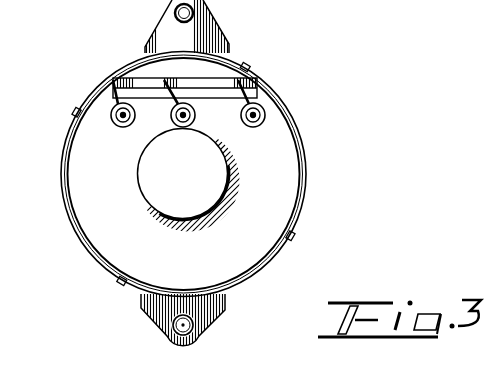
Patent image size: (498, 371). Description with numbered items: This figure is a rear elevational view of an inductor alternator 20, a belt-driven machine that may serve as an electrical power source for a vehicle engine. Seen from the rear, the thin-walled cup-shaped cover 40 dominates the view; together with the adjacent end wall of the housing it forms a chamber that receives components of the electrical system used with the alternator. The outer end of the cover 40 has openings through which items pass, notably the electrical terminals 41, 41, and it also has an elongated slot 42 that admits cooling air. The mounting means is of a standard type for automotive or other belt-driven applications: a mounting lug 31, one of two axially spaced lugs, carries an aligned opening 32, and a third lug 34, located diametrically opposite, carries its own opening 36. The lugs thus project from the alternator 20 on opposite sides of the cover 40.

The inductor alternator 20 is at (213, 180).
The mounting lug 31 is at (197, 336).
The opening 32 is at (180, 325).
The lug 34 is at (191, 30).
The opening 36 is at (176, 10).
The cup-shaped cover 40 is at (308, 178).
The electrical terminals 41 is at (118, 126).
The elongated slot 42 is at (243, 88).